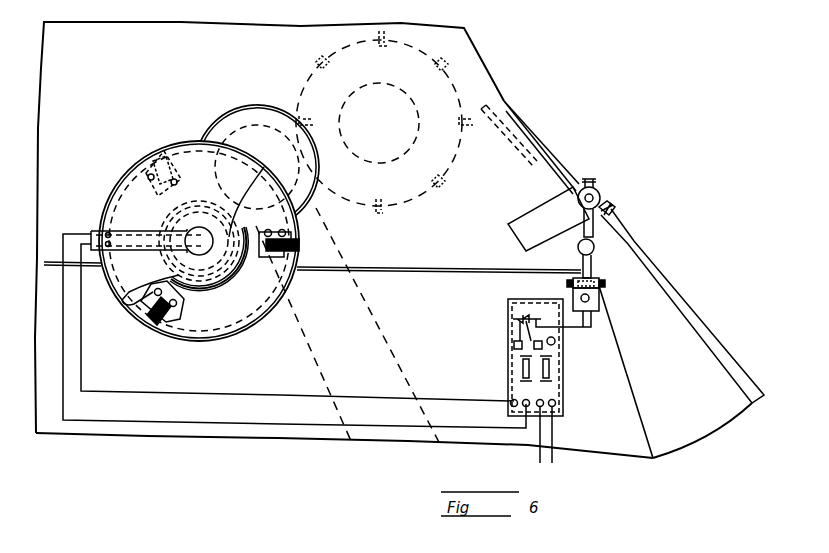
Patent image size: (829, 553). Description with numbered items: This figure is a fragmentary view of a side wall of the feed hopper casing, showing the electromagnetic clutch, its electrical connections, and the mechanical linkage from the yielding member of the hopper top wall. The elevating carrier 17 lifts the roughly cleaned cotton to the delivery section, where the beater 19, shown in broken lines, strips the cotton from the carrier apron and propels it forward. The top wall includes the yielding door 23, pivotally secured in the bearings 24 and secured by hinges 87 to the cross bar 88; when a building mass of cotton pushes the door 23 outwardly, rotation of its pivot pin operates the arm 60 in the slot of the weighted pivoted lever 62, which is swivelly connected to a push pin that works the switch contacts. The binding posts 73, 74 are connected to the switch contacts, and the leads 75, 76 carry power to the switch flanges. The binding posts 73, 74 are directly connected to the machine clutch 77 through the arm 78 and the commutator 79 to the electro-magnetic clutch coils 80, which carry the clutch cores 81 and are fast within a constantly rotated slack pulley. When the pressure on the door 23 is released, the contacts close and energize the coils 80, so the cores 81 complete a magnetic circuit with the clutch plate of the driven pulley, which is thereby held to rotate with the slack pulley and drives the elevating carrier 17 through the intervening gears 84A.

The carrier 17 is at (400, 352).
The beater 19 is at (443, 93).
The door 23 is at (551, 172).
The bearings 24 is at (560, 189).
The arm 60 is at (580, 218).
The weighted pivoted lever 62 is at (591, 265).
The binding post 73 is at (525, 397).
The binding post 74 is at (507, 390).
The lead 75 is at (556, 402).
The lead 76 is at (545, 397).
The machine clutch 77 is at (184, 318).
The arm 78 is at (134, 233).
The commutator 79 is at (212, 273).
The electro-magnetic clutch coils 80 is at (176, 165).
The clutch cores 81 is at (155, 160).
The intervening gears 84A is at (248, 108).
The hinges 87 is at (619, 229).
The cross bar 88 is at (604, 211).